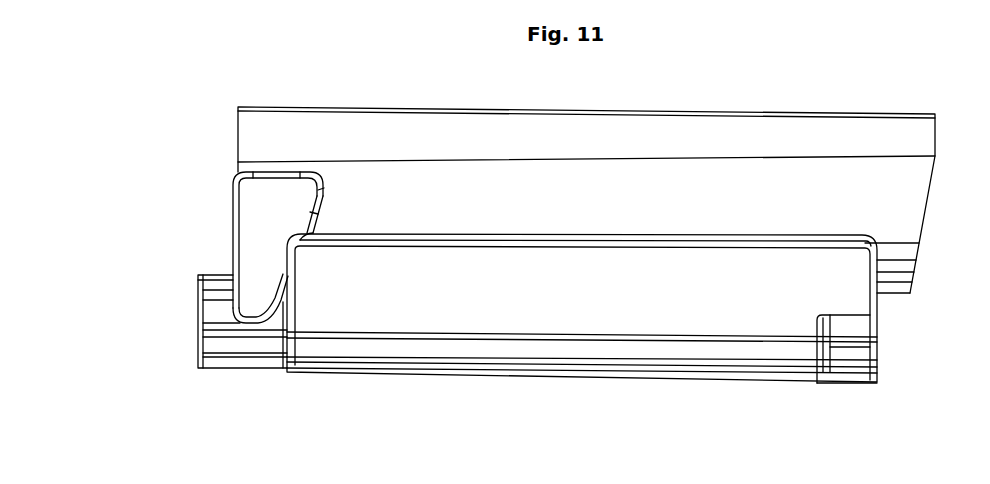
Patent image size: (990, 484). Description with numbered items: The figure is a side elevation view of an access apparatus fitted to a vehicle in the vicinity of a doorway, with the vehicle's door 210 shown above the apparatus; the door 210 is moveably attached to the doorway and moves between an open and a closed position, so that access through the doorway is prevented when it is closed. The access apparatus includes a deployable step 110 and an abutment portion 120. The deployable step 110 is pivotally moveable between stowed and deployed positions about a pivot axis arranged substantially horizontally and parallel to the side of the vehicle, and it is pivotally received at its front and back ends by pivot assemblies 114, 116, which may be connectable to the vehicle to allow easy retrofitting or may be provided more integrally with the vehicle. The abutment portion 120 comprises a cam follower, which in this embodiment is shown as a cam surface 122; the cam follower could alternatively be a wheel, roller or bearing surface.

The door 210 is at (738, 120).
The deployable step 110 is at (551, 302).
The abutment portion 120 is at (257, 217).
The cam surface 122 is at (320, 215).
The pivot assembly 114 is at (235, 343).
The pivot assembly 116 is at (852, 352).